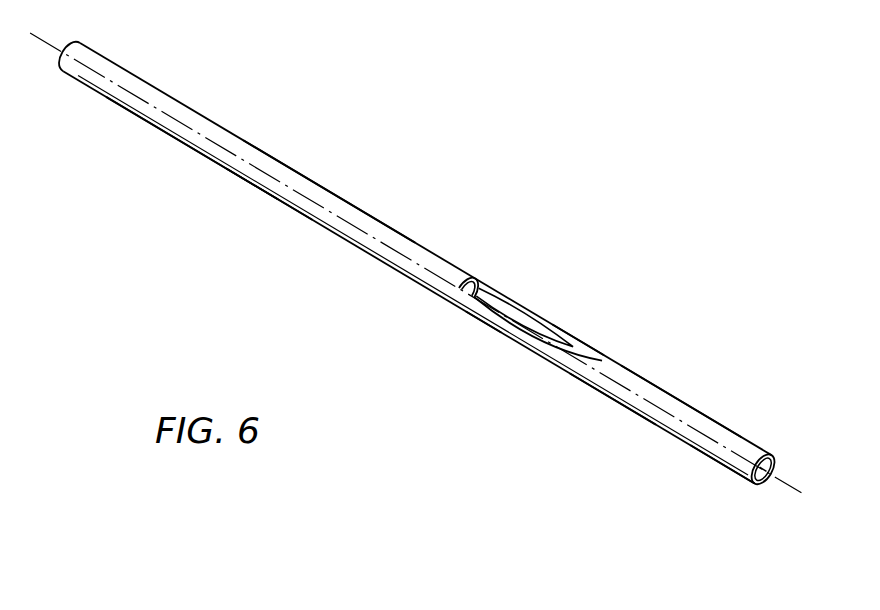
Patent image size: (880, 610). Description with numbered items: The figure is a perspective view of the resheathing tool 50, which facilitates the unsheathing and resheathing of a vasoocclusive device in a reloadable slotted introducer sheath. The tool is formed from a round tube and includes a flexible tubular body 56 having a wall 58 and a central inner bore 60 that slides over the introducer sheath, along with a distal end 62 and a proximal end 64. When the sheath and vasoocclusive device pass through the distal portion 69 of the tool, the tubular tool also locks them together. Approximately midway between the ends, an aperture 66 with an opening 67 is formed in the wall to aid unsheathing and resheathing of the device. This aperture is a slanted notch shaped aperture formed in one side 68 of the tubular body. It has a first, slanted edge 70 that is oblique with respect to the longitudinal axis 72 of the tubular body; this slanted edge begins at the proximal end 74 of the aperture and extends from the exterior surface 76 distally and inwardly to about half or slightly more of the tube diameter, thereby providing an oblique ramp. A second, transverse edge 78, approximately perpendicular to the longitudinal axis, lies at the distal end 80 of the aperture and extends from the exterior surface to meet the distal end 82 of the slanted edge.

The resheathing tool 50 is at (488, 168).
The flexible tubular body 56 is at (197, 152).
The wall 58 is at (783, 457).
The central inner bore 60 is at (767, 469).
The distal end 62 is at (63, 70).
The proximal end 64 is at (757, 490).
The aperture 66 is at (557, 290).
The opening 67 is at (493, 292).
The one side 68 is at (313, 190).
The distal portion 69 is at (257, 202).
The first, slanted edge 70 is at (557, 327).
The longitudinal axis 72 is at (50, 43).
The proximal end of the slanted notch shaped aperture 74 is at (563, 380).
The exterior surface 76 is at (620, 367).
The second, transverse edge 78 is at (445, 285).
The distal end of the slanted notch shaped aperture 80 is at (447, 320).
The distal end of the slanted edge 82 is at (482, 317).